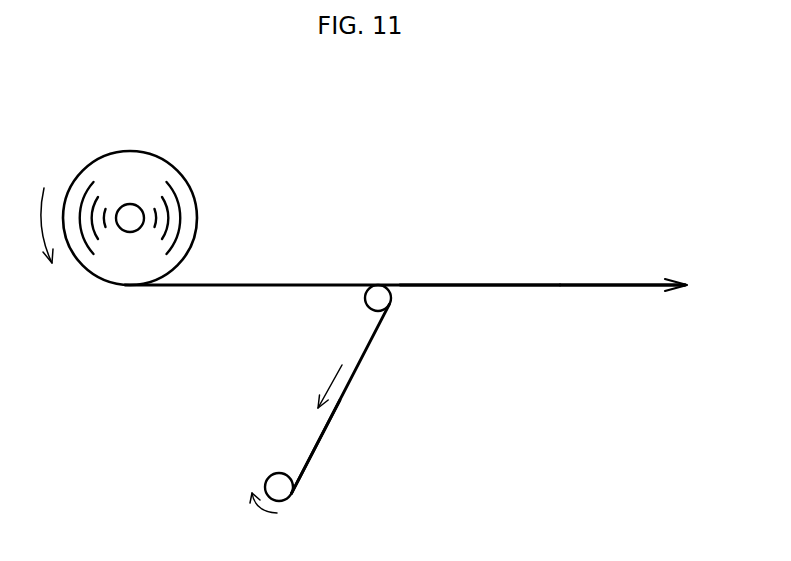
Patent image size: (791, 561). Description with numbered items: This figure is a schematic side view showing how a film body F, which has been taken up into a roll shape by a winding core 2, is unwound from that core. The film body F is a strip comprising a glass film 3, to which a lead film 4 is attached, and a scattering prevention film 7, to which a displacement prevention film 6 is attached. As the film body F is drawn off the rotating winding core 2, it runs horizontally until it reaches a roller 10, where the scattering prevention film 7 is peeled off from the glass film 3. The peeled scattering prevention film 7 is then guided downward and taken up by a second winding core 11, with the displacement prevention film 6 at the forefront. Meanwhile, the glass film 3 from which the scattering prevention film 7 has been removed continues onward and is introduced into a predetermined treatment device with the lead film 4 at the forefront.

The winding core 2 is at (128, 204).
The film body F is at (243, 283).
The glass film 3 is at (508, 283).
The lead film 4 is at (625, 283).
The roller 10 is at (366, 297).
The scattering prevention film 7 is at (352, 378).
The displacement prevention film 6 is at (304, 471).
The winding core 11 is at (271, 475).